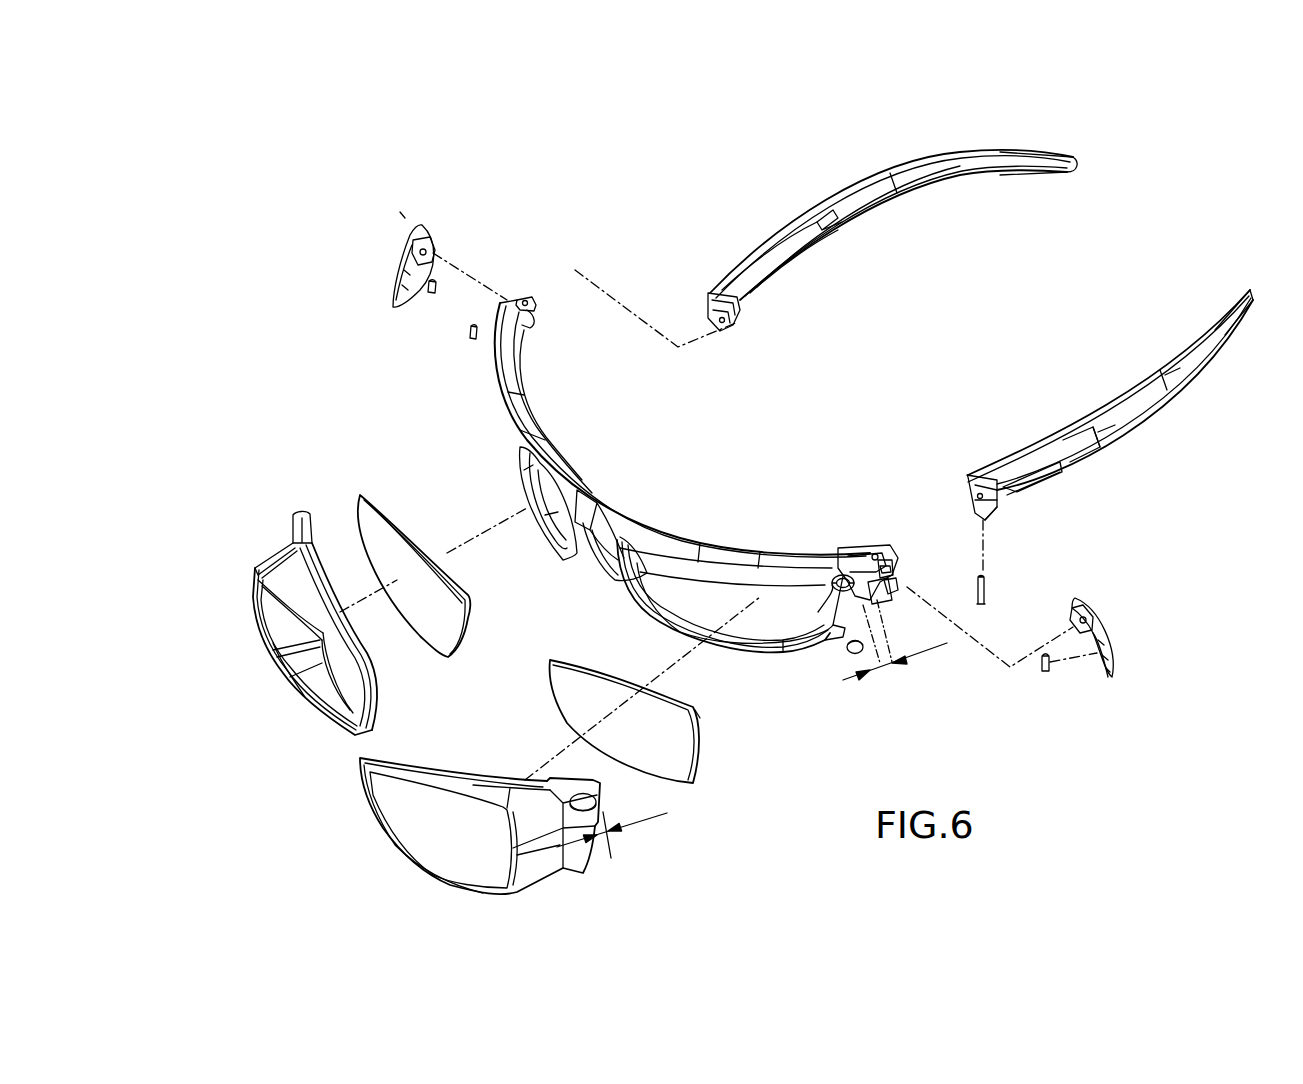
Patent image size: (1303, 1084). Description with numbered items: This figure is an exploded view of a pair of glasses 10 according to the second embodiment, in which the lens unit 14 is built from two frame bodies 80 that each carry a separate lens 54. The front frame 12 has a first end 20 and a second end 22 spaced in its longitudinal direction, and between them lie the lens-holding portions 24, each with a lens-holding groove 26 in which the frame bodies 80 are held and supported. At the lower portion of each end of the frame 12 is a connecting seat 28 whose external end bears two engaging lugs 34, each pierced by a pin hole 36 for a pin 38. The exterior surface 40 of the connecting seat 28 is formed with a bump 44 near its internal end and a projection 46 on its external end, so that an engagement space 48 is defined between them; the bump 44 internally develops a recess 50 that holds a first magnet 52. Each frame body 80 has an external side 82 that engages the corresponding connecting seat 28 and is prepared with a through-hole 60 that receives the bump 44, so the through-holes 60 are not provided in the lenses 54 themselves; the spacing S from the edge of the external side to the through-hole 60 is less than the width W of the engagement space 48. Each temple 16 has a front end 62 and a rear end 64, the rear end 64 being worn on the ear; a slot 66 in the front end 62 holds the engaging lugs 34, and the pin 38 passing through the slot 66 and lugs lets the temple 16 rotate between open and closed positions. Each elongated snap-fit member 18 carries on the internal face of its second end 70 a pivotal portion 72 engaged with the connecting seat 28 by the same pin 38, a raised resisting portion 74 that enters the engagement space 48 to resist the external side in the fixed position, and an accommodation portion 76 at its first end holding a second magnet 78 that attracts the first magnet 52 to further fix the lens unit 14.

The glasses 10 is at (405, 218).
The frame 12 is at (598, 495).
The lens unit 14 is at (306, 771).
The temple 16 is at (857, 205).
The snap-fit member 18 is at (410, 255).
The first end 20 is at (514, 298).
The second end 22 is at (860, 548).
The lens-holding portion 24 is at (540, 430).
The lens-holding groove 26 is at (632, 600).
The connecting seat 28 is at (538, 330).
The engaging lug 34 is at (885, 565).
The pin hole 36 is at (876, 556).
The pin 38 is at (986, 588).
The exterior surface 40 is at (826, 580).
The bump 44 is at (840, 577).
The projection 46 is at (895, 588).
The engagement space 48 is at (885, 568).
The recess 50 is at (818, 612).
The first magnet 52 is at (470, 335).
The lens 54 is at (445, 640).
The through-hole 60 is at (577, 800).
The front end 62 is at (724, 275).
The rear end 64 is at (1078, 168).
The slot 66 is at (712, 312).
The second end 70 is at (1076, 612).
The pivotal portion 72 is at (1088, 605).
The resisting portion 74 is at (1108, 616).
The accommodation portion 76 is at (1115, 668).
The second magnet 78 is at (418, 290).
The frame body 80 is at (268, 558).
The external side 82 is at (596, 796).
The spacing S is at (608, 822).
The width W is at (888, 670).